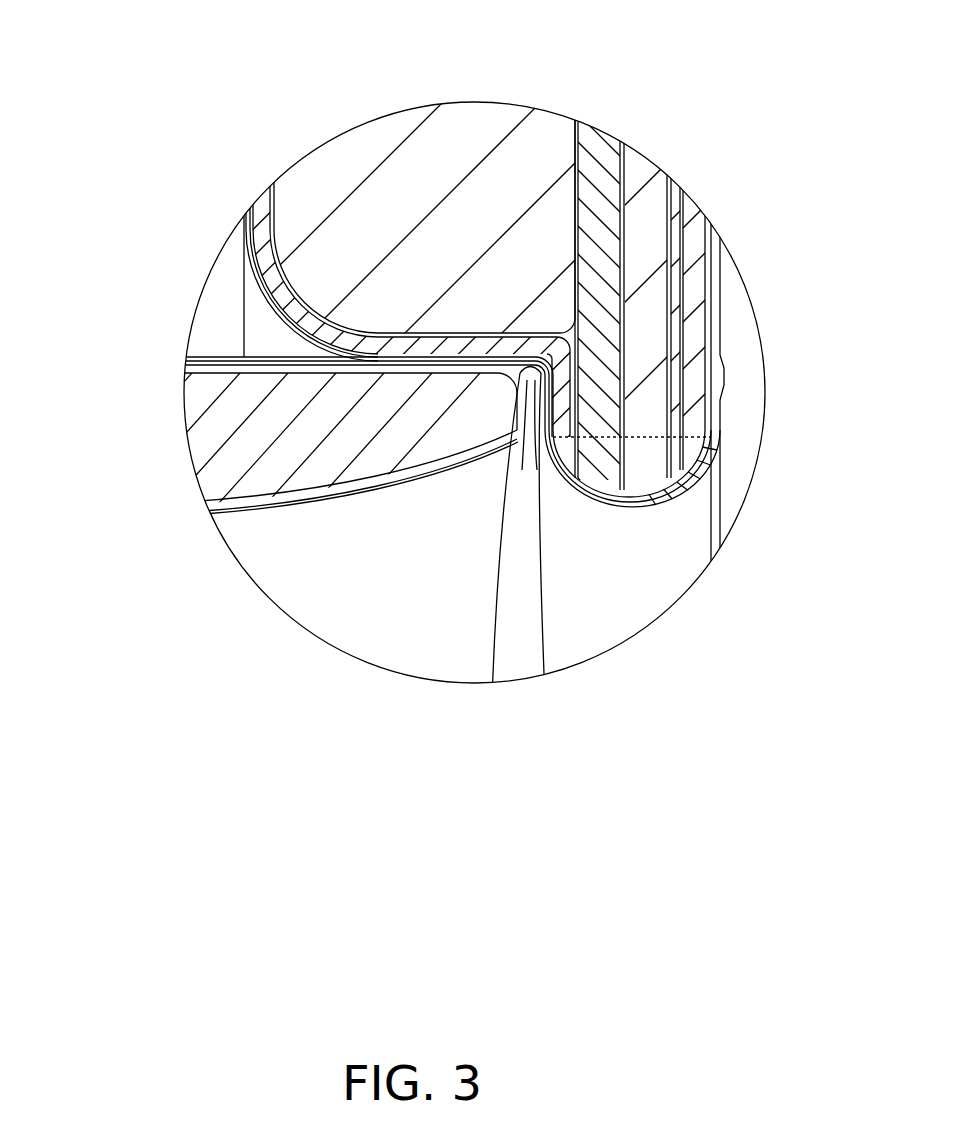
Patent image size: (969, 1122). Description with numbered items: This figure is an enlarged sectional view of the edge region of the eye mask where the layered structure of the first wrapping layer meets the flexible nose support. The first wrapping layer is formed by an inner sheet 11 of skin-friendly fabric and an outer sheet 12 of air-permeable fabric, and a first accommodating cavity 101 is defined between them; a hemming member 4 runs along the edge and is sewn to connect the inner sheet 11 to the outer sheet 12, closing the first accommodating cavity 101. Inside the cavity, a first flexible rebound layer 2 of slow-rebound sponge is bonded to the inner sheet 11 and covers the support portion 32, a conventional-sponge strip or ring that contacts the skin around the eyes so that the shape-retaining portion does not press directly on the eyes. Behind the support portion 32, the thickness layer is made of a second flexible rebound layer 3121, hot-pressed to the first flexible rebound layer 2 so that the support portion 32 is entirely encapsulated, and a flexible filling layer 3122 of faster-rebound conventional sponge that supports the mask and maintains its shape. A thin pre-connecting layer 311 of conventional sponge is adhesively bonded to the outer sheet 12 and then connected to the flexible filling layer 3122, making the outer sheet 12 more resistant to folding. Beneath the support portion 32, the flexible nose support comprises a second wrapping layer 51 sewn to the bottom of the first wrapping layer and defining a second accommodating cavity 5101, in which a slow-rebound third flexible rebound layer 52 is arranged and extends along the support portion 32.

The support portion 32 is at (492, 168).
The second flexible rebound layer 3121 is at (598, 178).
The flexible filling layer 3122 is at (647, 218).
The pre-connecting layer 311 is at (675, 238).
The outer sheet 12 is at (692, 278).
The first flexible rebound layer 2 is at (273, 243).
The first accommodating cavity 101 is at (263, 280).
The inner sheet 11 is at (262, 305).
The third flexible rebound layer 52 is at (250, 432).
The second accommodating cavity 5101 is at (247, 508).
The second wrapping layer 51 is at (280, 550).
The hemming member 4 is at (642, 555).